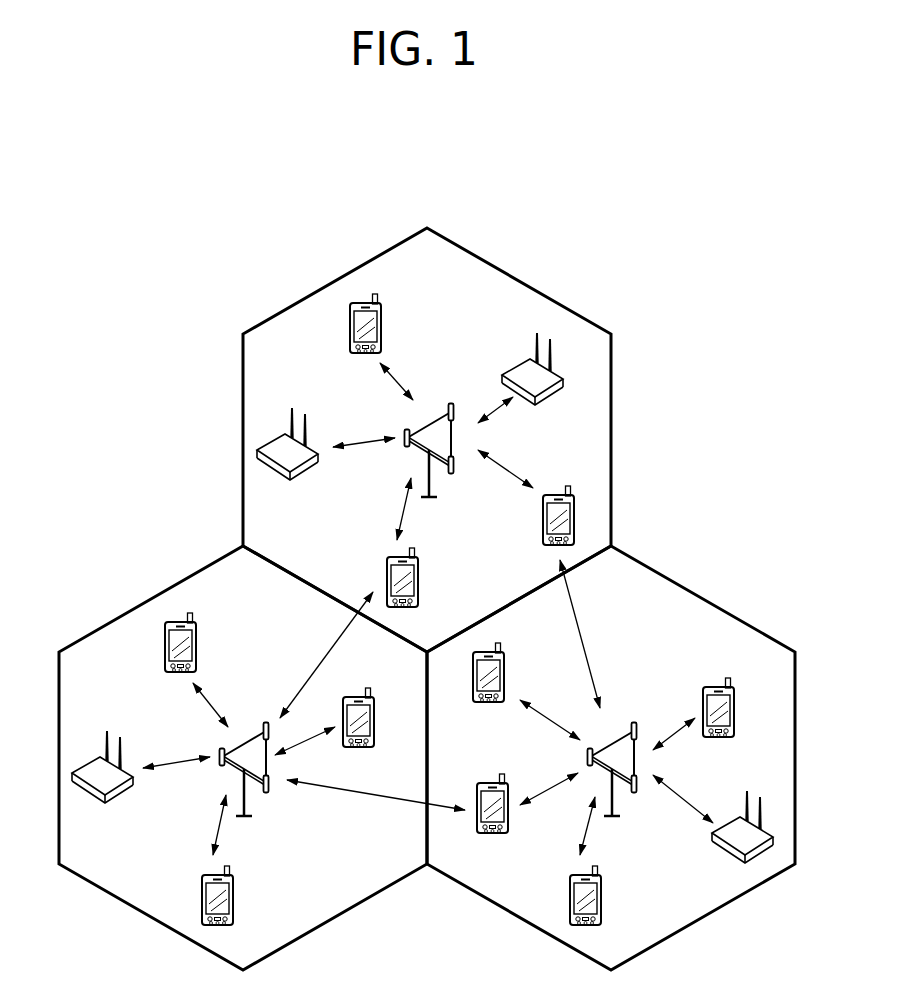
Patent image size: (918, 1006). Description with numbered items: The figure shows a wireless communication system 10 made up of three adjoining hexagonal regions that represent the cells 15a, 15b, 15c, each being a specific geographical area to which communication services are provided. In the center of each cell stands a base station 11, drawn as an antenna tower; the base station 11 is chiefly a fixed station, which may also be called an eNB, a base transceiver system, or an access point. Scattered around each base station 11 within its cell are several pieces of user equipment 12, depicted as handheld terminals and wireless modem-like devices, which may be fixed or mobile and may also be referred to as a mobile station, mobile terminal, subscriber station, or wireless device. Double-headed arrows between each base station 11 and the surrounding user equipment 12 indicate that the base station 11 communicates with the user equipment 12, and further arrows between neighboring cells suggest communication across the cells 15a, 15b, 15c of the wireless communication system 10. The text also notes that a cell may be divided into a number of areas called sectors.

The wireless communication system 10 is at (689, 338).
The base station 11 is at (448, 414).
The user equipment 12 is at (382, 327).
The cell 15a is at (611, 427).
The cell 15b is at (727, 612).
The cell 15c is at (125, 610).